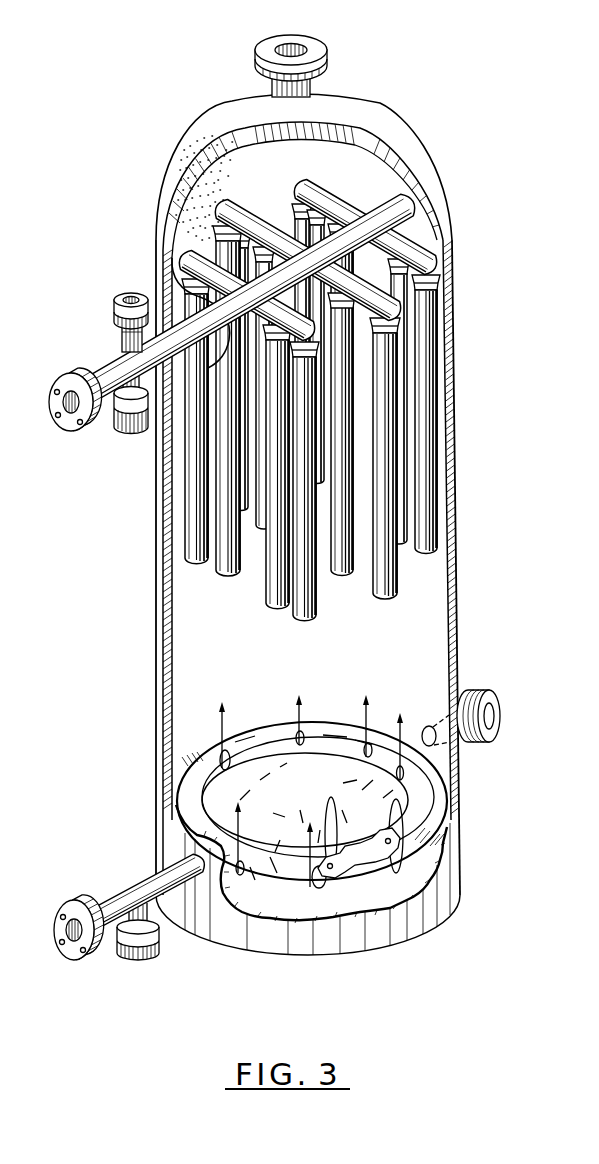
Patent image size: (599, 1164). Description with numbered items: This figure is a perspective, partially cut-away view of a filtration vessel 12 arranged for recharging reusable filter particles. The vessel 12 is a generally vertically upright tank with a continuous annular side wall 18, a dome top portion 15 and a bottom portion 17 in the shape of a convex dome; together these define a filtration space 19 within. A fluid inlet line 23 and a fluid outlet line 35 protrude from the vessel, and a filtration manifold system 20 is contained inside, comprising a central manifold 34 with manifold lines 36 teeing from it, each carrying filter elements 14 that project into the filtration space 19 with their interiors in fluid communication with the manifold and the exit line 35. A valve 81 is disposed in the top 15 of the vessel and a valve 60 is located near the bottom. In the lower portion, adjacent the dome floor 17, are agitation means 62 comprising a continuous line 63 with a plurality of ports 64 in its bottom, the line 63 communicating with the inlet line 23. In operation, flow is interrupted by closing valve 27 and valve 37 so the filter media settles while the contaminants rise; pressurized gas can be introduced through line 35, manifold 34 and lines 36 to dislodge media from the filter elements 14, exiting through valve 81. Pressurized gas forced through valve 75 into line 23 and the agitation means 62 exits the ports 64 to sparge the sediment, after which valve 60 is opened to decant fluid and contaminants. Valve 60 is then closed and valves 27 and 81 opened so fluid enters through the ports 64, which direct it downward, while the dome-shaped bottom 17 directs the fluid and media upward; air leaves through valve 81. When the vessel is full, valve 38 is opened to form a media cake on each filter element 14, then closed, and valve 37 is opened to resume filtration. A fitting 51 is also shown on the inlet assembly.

The filtration vessel 12 is at (348, 511).
The filter elements 14 is at (378, 590).
The dome top portion 15 is at (370, 100).
The bottom portion 17 is at (369, 895).
The annular side wall 18 is at (453, 537).
The filtration space 19 is at (256, 659).
The filtration manifold system 20 is at (413, 201).
The fluid inlet line 23 is at (135, 882).
The valve 27 is at (62, 908).
The central manifold 34 is at (360, 190).
The fluid outlet line 35 is at (121, 350).
The manifold lines 36 is at (250, 212).
The valve 37 is at (62, 372).
The valve 38 is at (127, 293).
The lower fitting 51 is at (127, 430).
The valve 60 is at (491, 697).
The agitation means 62 is at (423, 780).
The continuous line 63 is at (285, 858).
The ports 64 is at (311, 791).
The valve 75 is at (145, 960).
The valve 81 is at (313, 36).